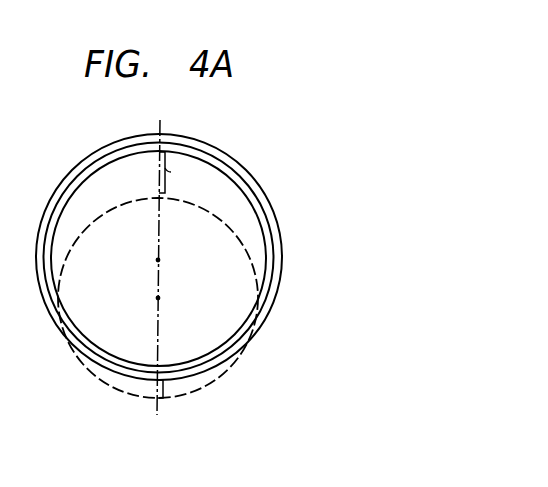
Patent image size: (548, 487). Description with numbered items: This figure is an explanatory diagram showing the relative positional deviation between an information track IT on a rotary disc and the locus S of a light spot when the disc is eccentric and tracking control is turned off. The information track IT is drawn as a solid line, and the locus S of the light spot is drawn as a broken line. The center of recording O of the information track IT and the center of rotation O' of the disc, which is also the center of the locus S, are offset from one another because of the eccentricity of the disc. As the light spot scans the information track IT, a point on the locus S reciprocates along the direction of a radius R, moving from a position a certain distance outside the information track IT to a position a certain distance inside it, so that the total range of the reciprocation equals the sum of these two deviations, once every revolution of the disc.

The information track IT is at (279, 231).
The locus of the light spot S is at (232, 362).
The radius R is at (160, 123).
The center of recording of the information track O is at (167, 260).
The center of rotation of the disc O' is at (169, 298).